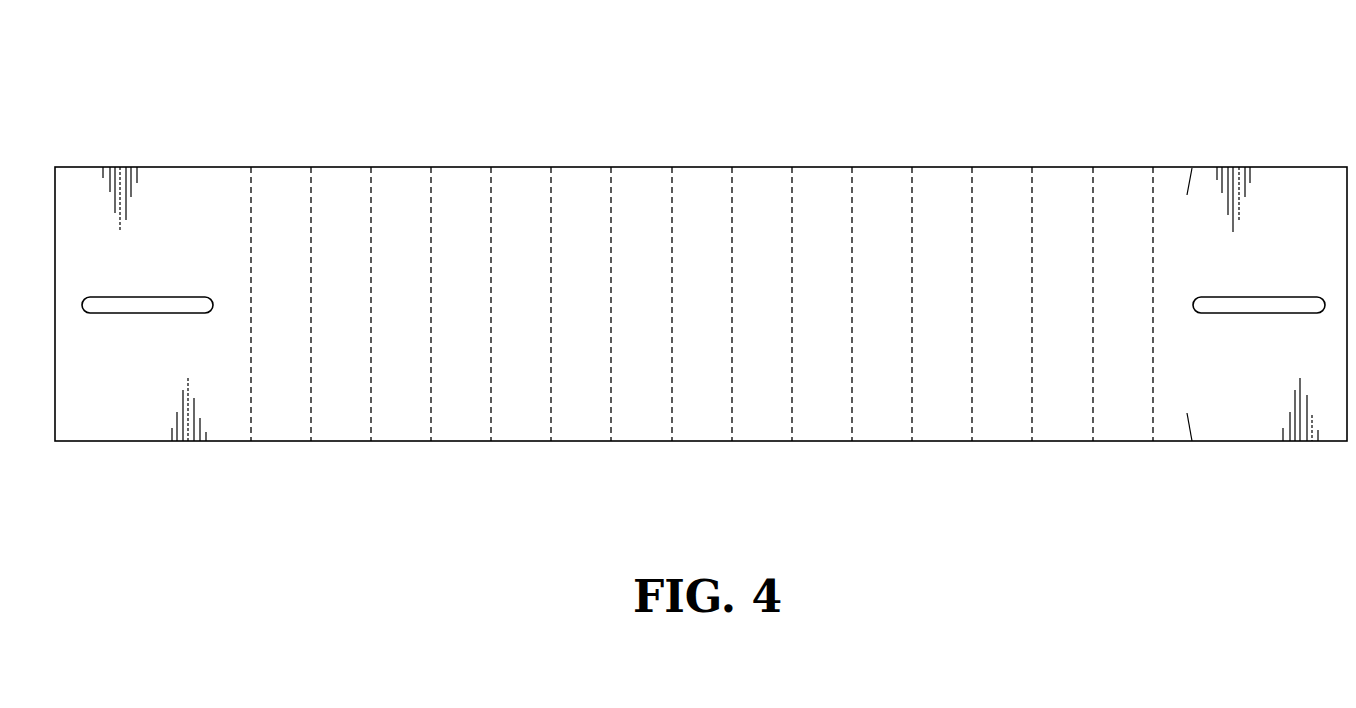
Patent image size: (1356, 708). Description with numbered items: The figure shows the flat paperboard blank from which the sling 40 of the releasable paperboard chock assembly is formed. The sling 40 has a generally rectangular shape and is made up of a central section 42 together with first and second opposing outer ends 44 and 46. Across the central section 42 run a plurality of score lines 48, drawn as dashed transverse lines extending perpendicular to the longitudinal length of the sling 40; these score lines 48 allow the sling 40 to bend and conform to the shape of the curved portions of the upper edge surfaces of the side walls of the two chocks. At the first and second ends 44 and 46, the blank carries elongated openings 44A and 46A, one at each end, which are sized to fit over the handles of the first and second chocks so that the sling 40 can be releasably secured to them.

The sling 40 is at (452, 454).
The central section 42 is at (640, 183).
The first outer end 44 is at (1200, 457).
The opening 44A is at (1232, 313).
The second outer end 46 is at (173, 455).
The opening 46A is at (145, 313).
The score lines 48 is at (252, 211).